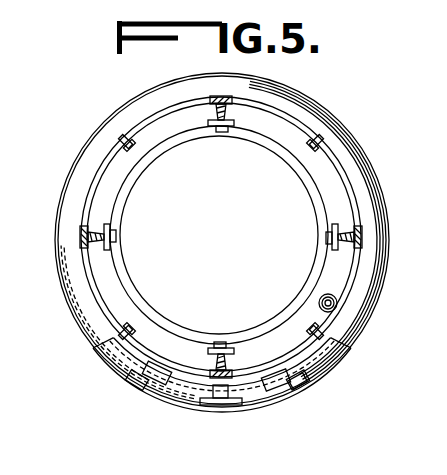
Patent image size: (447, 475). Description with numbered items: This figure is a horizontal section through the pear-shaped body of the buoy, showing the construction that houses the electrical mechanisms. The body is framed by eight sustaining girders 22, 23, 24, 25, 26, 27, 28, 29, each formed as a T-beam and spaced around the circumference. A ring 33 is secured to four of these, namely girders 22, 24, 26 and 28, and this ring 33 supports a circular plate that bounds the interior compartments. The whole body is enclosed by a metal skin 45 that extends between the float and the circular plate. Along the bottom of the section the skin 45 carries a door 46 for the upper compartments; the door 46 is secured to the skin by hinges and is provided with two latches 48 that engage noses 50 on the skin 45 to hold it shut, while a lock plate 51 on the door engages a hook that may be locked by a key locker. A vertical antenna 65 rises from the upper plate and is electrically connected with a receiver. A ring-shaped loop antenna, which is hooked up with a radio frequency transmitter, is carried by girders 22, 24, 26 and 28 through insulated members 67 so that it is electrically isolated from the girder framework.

The sustaining girder 22 is at (214, 380).
The sustaining girder 23 is at (332, 345).
The sustaining girder 24 is at (360, 238).
The sustaining girder 25 is at (318, 144).
The sustaining girder 26 is at (214, 99).
The sustaining girder 27 is at (124, 150).
The sustaining girder 28 is at (82, 240).
The sustaining girder 29 is at (120, 336).
The ring 33 is at (276, 146).
The metal skin 45 is at (368, 163).
The door 46 is at (298, 386).
The latch 48 is at (138, 380).
The nose 50 is at (166, 383).
The lock plate 51 is at (226, 402).
The vertical antenna 65 is at (337, 303).
The insulated member 67 is at (102, 238).